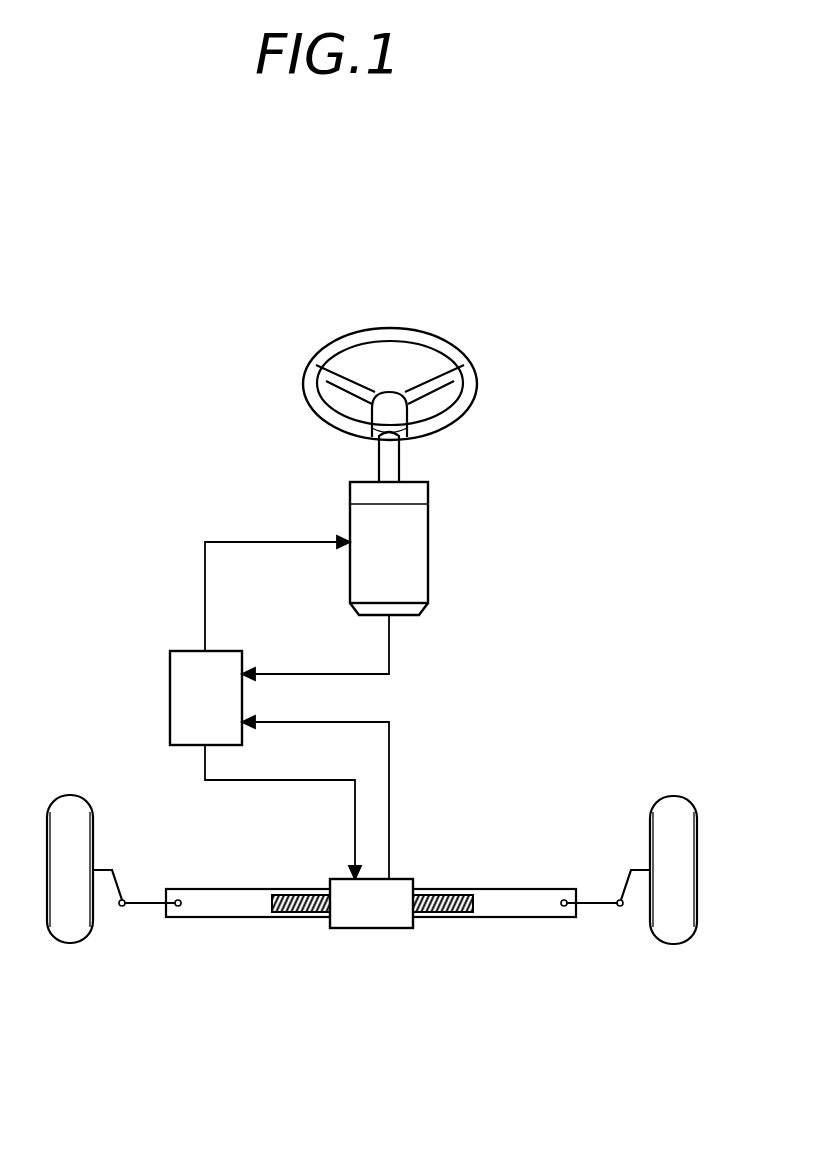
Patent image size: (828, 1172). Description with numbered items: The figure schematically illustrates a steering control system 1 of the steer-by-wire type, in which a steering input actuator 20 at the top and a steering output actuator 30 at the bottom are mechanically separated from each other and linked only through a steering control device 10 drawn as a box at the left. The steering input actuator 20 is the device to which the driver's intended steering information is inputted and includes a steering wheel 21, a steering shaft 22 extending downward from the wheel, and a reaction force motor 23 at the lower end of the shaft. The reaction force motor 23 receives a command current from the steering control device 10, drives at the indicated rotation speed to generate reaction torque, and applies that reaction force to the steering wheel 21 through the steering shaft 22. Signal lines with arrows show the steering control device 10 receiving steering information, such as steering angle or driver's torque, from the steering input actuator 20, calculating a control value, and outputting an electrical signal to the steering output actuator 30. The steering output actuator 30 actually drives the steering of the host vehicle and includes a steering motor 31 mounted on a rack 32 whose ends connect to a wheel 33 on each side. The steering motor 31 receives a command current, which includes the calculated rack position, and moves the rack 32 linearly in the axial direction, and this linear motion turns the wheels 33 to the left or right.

The steering control system 1 is at (121, 268).
The steering control device 10 is at (170, 698).
The steering input actuator 20 is at (485, 333).
The steering wheel 21 is at (391, 333).
The steering shaft 22 is at (430, 542).
The reaction force motor 23 is at (400, 616).
The steering output actuator 30 is at (405, 936).
The steering motor 31 is at (372, 930).
The rack 32 is at (247, 920).
The wheel 33 is at (68, 943).